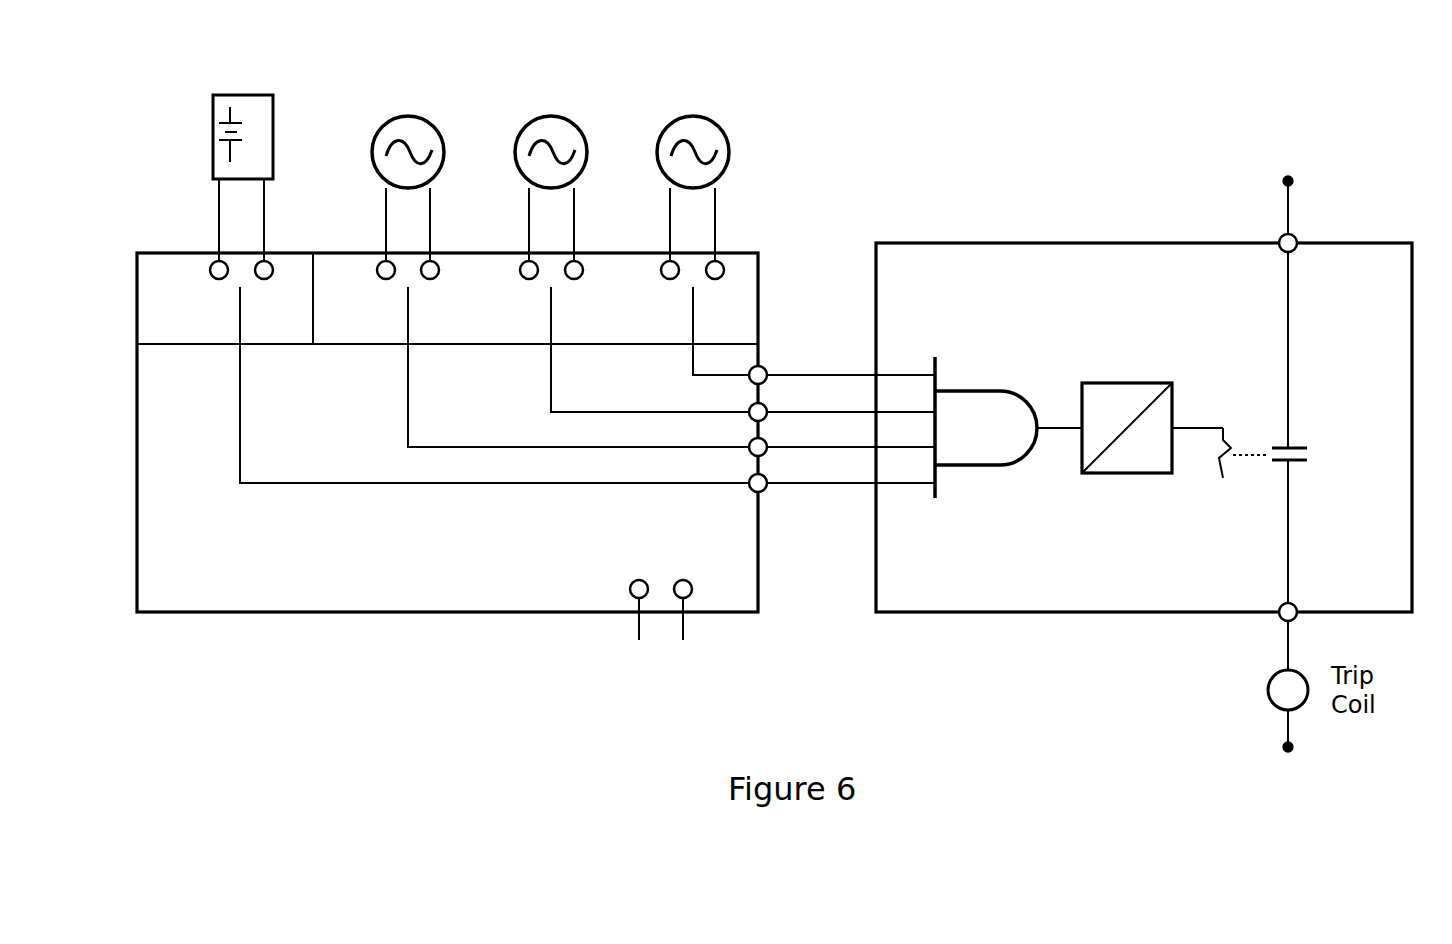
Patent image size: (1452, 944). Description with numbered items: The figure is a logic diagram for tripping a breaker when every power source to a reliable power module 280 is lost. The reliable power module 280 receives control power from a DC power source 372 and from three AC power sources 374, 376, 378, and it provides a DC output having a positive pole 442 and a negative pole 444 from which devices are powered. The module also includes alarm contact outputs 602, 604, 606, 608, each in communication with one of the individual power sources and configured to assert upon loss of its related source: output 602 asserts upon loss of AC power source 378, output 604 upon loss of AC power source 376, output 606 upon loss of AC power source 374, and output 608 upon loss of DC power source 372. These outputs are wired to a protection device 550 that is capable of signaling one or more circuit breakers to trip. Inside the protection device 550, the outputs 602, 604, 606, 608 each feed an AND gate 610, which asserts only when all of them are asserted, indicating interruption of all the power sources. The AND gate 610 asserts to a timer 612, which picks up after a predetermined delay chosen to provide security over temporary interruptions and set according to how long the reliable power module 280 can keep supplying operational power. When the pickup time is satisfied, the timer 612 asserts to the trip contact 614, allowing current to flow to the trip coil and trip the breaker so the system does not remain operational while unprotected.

The reliable power module 280 is at (218, 612).
The DC power source 372 is at (211, 122).
The AC power source 374 is at (374, 138).
The AC power source 376 is at (517, 138).
The AC power source 378 is at (659, 138).
The positive pole 442 is at (632, 580).
The negative pole 444 is at (689, 580).
The protection device 550 is at (1057, 243).
The alarm contact output 602 is at (765, 366).
The alarm contact output 604 is at (780, 399).
The alarm contact output 606 is at (780, 435).
The alarm contact output 608 is at (765, 492).
The AND gate 610 is at (973, 466).
The timer 612 is at (1133, 383).
The trip contact 614 is at (1288, 420).